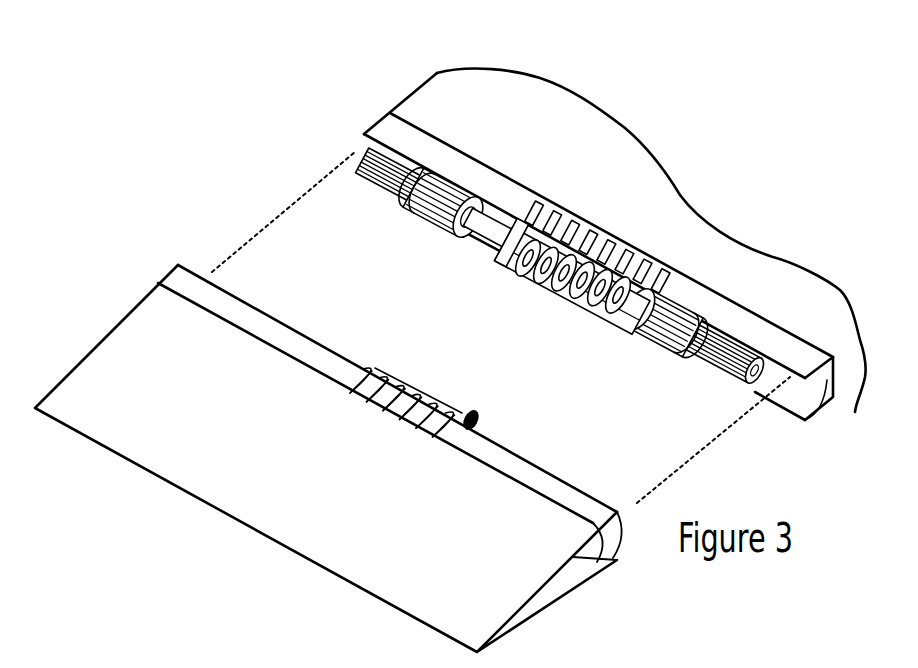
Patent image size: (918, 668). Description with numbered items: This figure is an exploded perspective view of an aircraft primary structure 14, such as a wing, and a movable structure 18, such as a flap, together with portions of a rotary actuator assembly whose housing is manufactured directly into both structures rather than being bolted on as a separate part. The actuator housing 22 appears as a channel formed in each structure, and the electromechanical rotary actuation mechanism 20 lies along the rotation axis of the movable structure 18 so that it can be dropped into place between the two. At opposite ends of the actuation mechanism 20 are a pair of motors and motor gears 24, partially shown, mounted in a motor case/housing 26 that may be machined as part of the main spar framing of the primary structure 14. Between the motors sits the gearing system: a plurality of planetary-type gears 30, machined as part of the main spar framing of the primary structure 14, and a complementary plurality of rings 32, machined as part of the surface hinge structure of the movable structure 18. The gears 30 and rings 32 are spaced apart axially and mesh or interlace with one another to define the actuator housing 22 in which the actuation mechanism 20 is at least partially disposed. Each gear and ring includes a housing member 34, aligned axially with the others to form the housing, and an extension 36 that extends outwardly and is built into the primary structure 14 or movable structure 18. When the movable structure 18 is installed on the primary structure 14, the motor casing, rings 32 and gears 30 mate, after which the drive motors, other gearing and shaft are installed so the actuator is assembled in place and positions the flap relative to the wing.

The primary structure 14 is at (850, 368).
The movable structure 18 is at (551, 578).
The actuation mechanism 20 is at (466, 266).
The actuator housing 22 is at (465, 167).
The motors and motor gears 24 is at (391, 192).
The motor case/housing 26 is at (437, 220).
The gears 30 is at (563, 306).
The rings 32 is at (471, 411).
The housing member 34 is at (513, 290).
The extension 36 is at (578, 222).